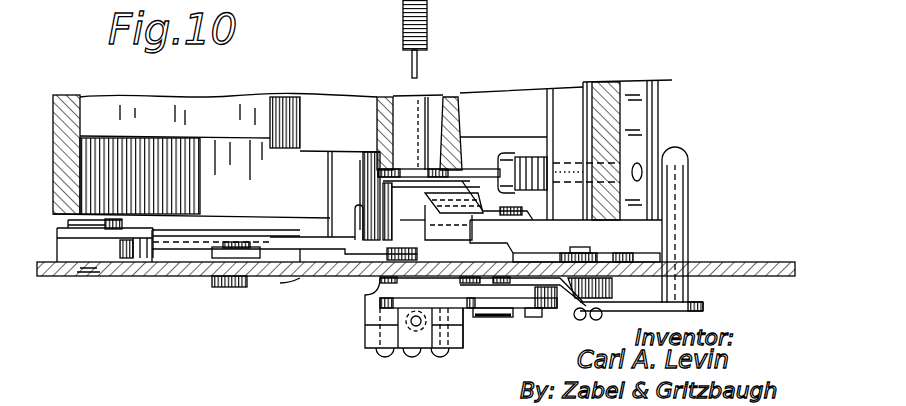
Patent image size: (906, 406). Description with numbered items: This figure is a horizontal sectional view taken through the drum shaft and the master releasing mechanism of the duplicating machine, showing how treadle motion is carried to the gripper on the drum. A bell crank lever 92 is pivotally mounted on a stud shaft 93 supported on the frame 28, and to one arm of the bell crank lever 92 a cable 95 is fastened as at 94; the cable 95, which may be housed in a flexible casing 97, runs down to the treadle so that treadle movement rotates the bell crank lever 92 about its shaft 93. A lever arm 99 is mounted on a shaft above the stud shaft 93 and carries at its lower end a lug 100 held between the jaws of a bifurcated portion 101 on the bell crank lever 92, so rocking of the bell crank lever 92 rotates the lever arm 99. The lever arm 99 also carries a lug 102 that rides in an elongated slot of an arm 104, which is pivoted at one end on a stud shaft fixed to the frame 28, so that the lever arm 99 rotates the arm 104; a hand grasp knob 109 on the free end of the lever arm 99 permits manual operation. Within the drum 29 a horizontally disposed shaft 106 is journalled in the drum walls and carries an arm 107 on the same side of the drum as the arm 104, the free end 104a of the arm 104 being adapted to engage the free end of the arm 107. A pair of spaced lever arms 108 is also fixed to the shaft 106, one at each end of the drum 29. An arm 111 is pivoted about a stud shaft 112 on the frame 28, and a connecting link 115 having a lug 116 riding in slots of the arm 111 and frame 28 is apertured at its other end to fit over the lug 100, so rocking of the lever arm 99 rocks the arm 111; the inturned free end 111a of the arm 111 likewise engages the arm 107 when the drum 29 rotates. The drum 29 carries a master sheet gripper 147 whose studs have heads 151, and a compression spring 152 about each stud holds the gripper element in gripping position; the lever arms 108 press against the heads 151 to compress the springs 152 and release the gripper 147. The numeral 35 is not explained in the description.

The frame 28 is at (777, 249).
The drum 29 is at (65, 96).
The block 35 is at (338, 192).
The bell crank lever 92 is at (579, 319).
The stud shaft 93 is at (490, 313).
The cable fastening 94 is at (406, 353).
The cable 95 is at (413, 323).
The flexible casing 97 is at (430, 12).
The lever arm 99 is at (703, 306).
The lug 100 is at (548, 318).
The bifurcated portion 101 is at (522, 305).
The lug 102 is at (587, 253).
The arm 104 is at (547, 256).
The free end of arm 104a is at (433, 237).
The shaft 106 is at (405, 107).
The arm 107 is at (470, 230).
The lever arms 108 is at (467, 162).
The hand grasp knob 109 is at (688, 190).
The arm 111 is at (143, 235).
The inturned free end 111a is at (358, 238).
The stud shaft 112 is at (90, 277).
The connecting link 115 is at (295, 280).
The lug 116 is at (246, 243).
The master sheet gripper 147 is at (640, 108).
The head 151 is at (509, 155).
The compression spring 152 is at (537, 156).